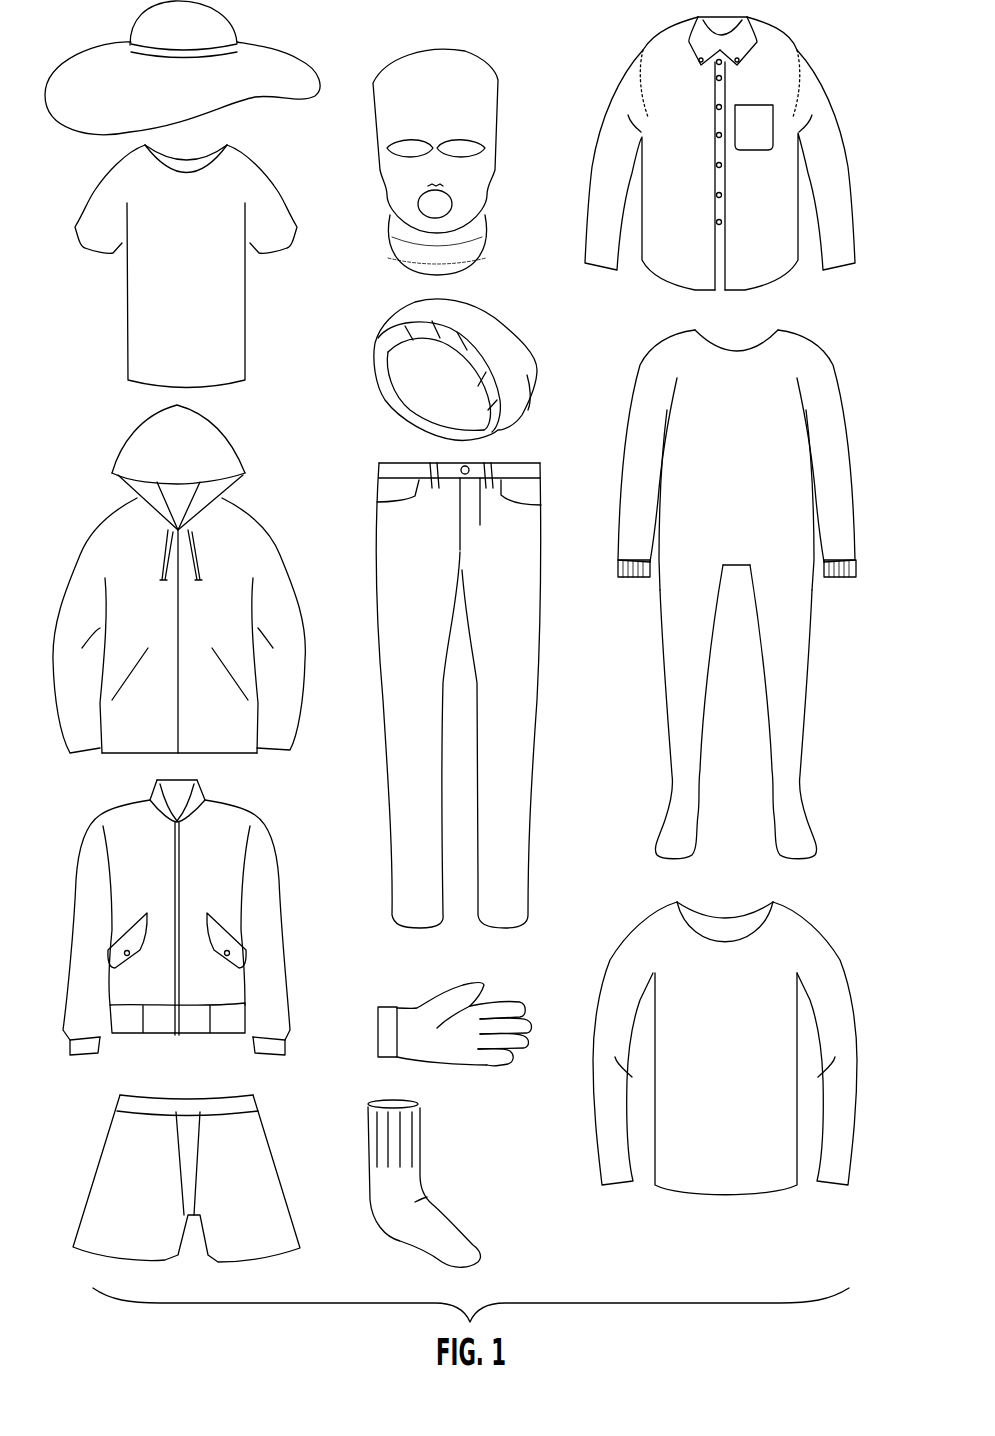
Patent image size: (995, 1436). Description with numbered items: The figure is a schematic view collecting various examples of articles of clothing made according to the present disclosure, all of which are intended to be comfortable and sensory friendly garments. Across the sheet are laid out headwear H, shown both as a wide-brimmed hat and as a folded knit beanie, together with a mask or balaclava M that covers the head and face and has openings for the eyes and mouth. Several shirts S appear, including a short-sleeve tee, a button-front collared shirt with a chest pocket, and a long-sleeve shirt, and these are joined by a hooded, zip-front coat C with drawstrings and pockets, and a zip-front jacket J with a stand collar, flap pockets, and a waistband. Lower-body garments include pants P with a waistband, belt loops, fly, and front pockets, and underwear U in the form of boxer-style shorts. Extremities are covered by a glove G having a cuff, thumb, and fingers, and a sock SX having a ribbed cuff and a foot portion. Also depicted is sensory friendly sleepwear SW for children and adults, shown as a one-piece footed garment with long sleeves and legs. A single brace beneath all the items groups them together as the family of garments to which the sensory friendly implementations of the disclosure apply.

The headwear H is at (287, 72).
The shirt S is at (227, 318).
The mask or balaclava M is at (475, 85).
The sensory friendly sleepwear SW is at (652, 412).
The coat C is at (270, 573).
The pants P is at (530, 539).
The jacket J is at (270, 893).
The underwear U is at (262, 1152).
The glove G is at (488, 1063).
The sock SX is at (427, 1198).